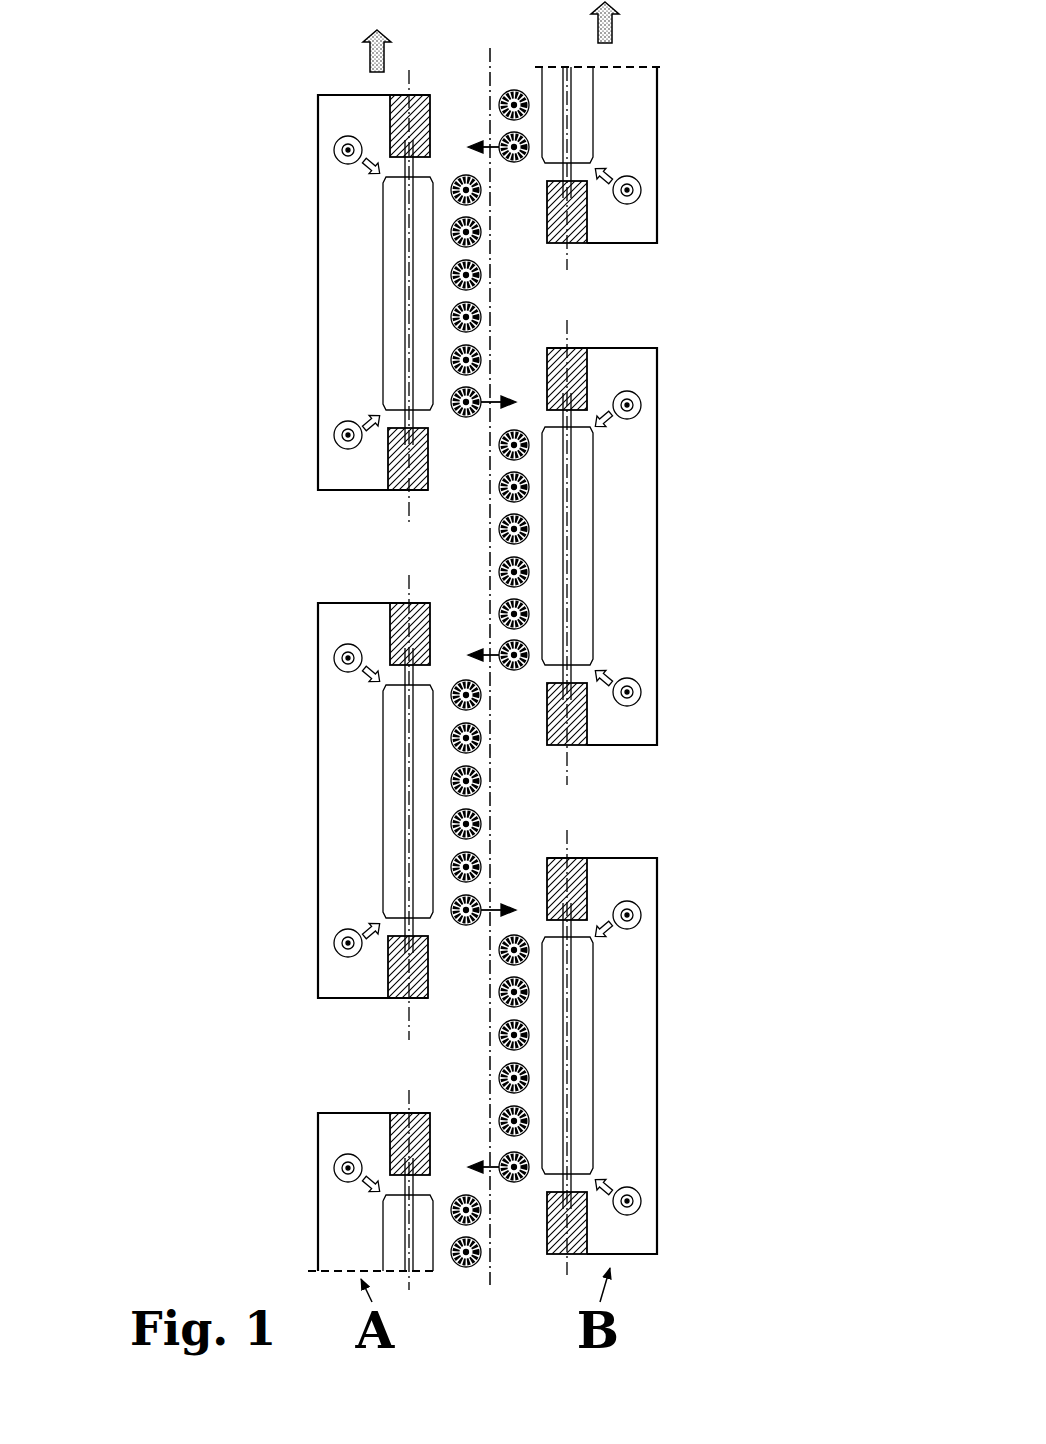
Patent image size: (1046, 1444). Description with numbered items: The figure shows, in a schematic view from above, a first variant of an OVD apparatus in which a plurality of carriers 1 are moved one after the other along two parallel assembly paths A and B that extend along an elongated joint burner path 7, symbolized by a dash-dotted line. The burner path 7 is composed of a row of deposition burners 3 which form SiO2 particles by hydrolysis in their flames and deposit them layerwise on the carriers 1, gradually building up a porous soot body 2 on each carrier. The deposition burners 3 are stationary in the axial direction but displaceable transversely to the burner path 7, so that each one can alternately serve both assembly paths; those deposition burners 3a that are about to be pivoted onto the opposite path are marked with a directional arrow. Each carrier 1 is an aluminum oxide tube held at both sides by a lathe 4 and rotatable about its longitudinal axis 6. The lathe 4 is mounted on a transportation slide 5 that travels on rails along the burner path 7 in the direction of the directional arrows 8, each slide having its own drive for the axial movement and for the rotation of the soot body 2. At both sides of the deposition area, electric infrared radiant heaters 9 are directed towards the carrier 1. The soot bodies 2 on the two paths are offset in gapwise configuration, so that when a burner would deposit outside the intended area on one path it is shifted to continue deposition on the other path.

The carrier 1 is at (560, 580).
The soot body 2 is at (580, 535).
The deposition burner 3 is at (455, 695).
The deposition burner 3a is at (452, 400).
The lathe 4 is at (582, 380).
The transportation slide 5 is at (305, 298).
The longitudinal axis 6 is at (568, 765).
The burner path 7 is at (487, 1057).
The directional arrow 8 is at (375, 52).
The electric infrared radiant heater 9 is at (641, 405).